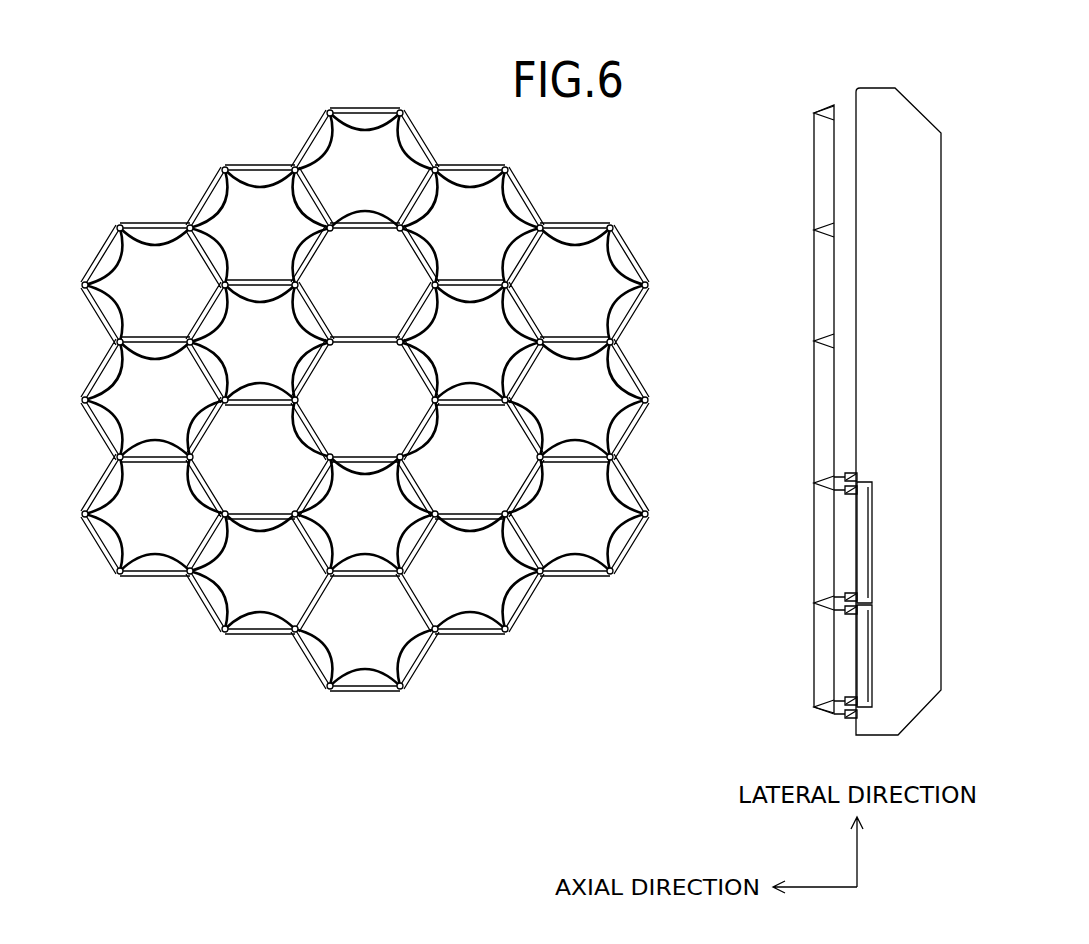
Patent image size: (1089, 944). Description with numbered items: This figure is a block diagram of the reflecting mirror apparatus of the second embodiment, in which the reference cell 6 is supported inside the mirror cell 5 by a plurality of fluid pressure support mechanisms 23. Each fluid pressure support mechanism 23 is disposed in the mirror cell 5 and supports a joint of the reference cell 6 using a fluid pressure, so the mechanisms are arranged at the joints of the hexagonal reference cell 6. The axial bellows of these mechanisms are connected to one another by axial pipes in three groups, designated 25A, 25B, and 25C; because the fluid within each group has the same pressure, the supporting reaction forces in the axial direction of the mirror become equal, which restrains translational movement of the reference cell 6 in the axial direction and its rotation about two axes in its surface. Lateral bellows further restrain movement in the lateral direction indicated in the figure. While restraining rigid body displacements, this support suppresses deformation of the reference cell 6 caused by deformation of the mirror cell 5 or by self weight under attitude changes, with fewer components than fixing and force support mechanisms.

The mirror cell 5 is at (940, 183).
The reference cell 6 is at (815, 108).
The fluid pressure support mechanism 23 is at (843, 699).
The axial pipe group 25A is at (413, 652).
The axial pipe group 25B is at (150, 244).
The axial pipe group 25C is at (618, 244).